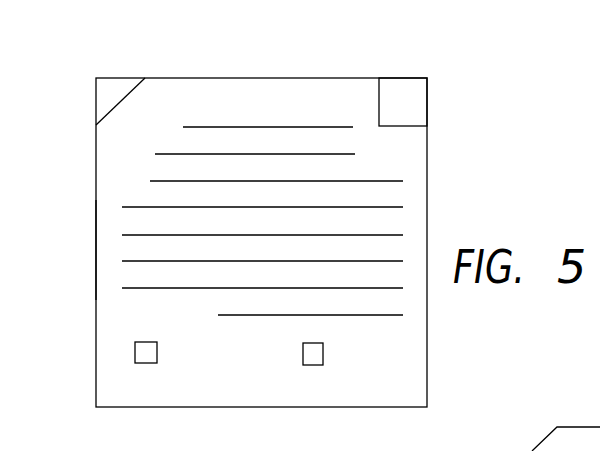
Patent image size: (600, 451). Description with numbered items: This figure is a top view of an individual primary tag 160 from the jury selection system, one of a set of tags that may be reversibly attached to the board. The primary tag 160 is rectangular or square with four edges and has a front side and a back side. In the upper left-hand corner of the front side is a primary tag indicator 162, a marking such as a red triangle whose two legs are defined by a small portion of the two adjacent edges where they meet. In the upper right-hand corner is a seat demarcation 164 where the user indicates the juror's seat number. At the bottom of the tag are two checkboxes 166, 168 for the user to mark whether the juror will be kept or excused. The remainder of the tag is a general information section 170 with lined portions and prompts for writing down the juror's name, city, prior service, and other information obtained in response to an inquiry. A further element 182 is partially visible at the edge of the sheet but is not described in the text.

The primary tag 160 is at (265, 78).
The primary tag indicator 162 is at (113, 92).
The seat demarcation 164 is at (403, 100).
The checkbox 166 is at (148, 357).
The checkbox 168 is at (313, 358).
The general information section 170 is at (100, 252).
The tray 182 is at (521, 446).